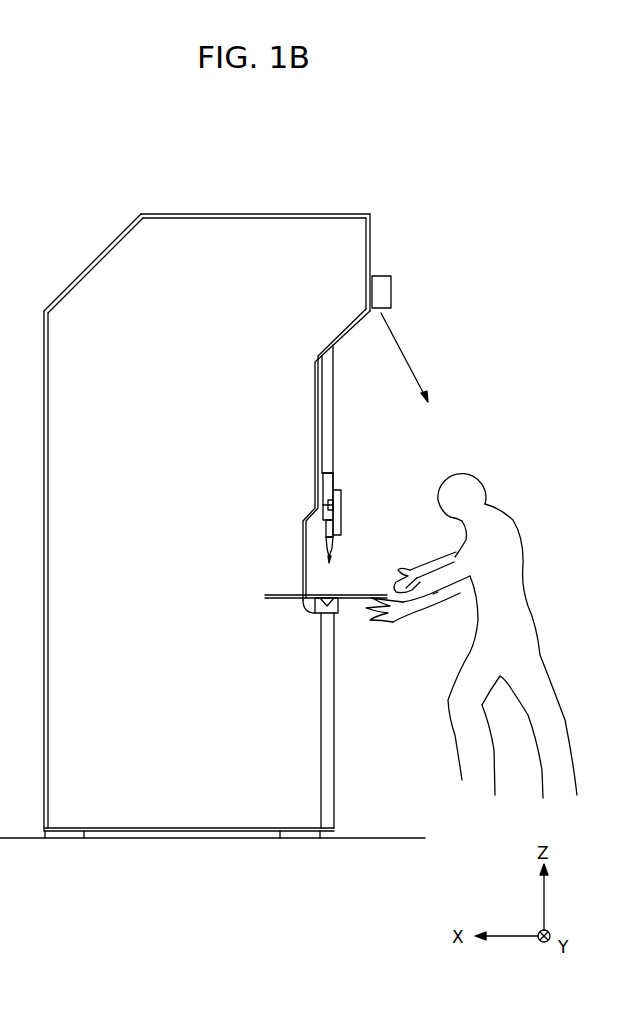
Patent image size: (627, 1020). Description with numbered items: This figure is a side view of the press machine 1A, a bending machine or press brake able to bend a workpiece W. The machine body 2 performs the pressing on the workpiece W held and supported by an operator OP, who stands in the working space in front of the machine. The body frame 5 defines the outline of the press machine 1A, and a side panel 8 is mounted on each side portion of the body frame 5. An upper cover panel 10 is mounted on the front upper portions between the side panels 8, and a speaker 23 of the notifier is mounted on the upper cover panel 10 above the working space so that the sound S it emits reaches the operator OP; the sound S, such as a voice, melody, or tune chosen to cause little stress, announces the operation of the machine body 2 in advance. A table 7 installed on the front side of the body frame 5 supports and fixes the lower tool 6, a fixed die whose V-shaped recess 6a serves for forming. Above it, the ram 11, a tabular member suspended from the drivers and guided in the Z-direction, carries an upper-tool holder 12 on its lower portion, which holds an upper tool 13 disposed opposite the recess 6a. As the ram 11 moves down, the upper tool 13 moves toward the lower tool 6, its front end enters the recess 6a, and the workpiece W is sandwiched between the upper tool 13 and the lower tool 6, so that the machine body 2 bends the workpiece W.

The press machine 1A is at (257, 147).
The body frame 5 is at (97, 259).
The side panel 8 is at (46, 530).
The upper cover panel 10 is at (371, 262).
The speaker 23 is at (392, 294).
The sound S is at (406, 350).
The ram 11 is at (333, 421).
The upper-tool holder 12 is at (342, 506).
The upper tool 13 is at (336, 547).
The workpiece W is at (300, 583).
The lower tool 6 is at (305, 610).
The V-shaped recess 6a is at (330, 596).
The table 7 is at (335, 714).
The machine body 2 is at (381, 648).
The operator OP is at (530, 588).